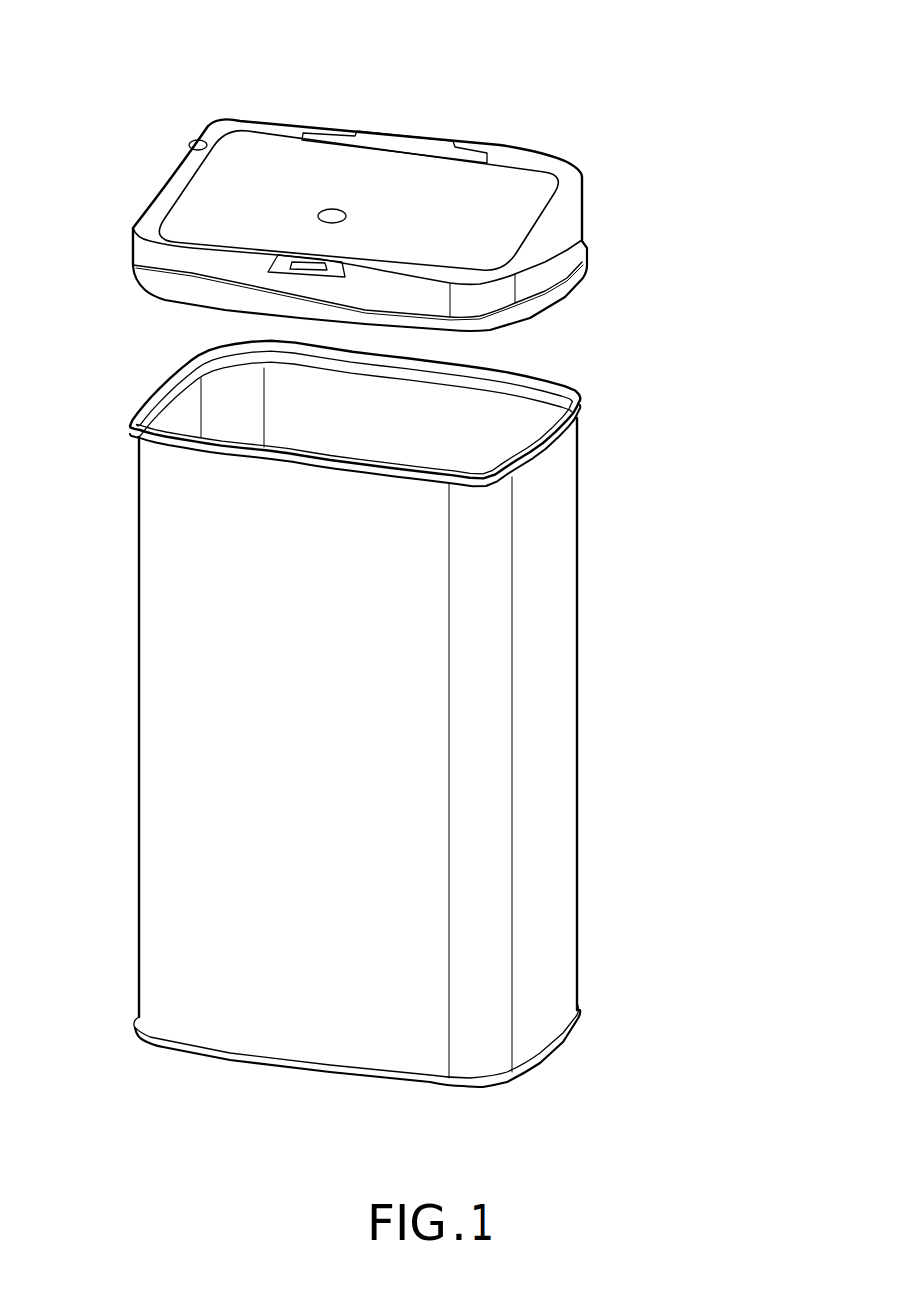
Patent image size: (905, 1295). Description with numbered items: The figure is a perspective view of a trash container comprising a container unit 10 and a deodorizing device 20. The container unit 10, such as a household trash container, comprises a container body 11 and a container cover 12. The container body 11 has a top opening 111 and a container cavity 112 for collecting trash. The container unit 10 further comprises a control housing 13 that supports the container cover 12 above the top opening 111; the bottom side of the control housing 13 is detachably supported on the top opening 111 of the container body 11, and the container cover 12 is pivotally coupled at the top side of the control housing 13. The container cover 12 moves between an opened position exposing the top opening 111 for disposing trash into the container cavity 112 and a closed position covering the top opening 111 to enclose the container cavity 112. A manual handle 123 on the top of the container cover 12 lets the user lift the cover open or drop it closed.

The container unit 10 is at (683, 325).
The container body 11 is at (545, 827).
The top opening 111 is at (507, 363).
The container cavity 112 is at (528, 422).
The deodorizing device 20 is at (194, 137).
The container cover 12 is at (512, 190).
The manual handle 123 is at (342, 200).
The control housing 13 is at (552, 257).